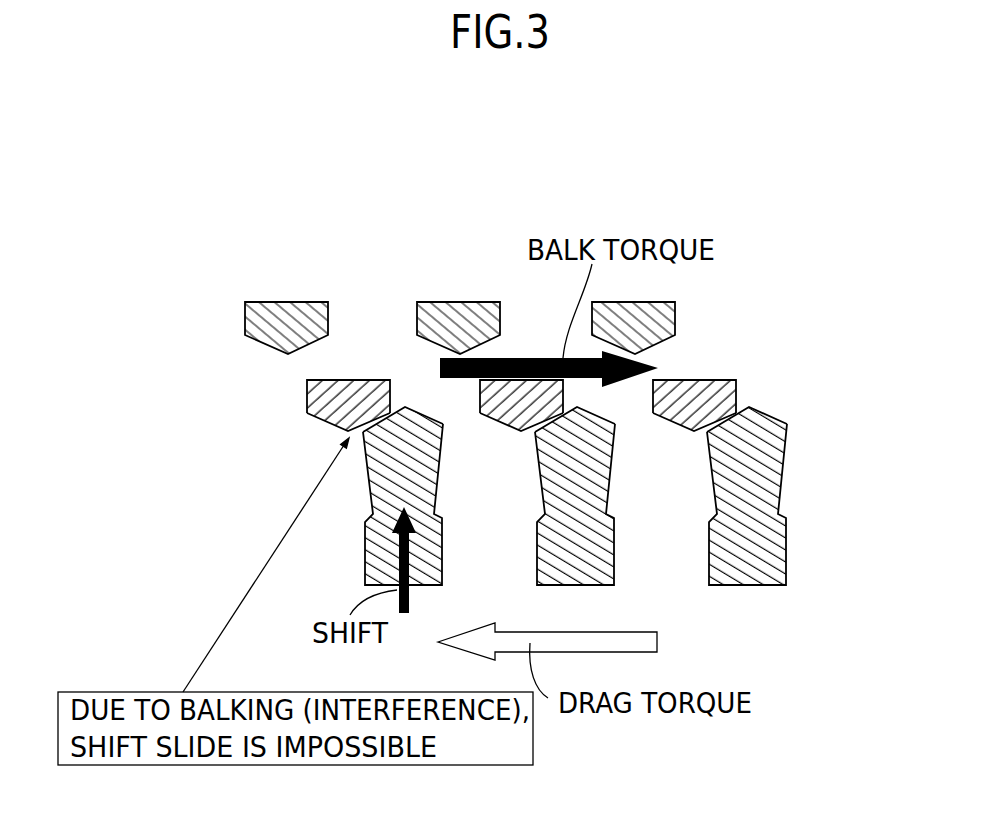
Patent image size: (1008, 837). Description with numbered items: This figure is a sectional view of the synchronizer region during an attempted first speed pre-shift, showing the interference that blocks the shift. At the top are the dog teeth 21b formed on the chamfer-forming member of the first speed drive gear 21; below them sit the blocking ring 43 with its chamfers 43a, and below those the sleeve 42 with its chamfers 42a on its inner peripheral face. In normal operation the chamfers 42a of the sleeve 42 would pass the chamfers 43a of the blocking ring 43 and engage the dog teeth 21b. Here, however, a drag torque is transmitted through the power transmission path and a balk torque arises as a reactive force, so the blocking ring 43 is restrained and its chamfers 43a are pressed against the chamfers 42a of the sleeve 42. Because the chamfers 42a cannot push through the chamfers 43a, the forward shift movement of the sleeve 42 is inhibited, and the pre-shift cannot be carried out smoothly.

The first speed drive gear 21 is at (505, 290).
The dog teeth 21b is at (320, 322).
The blocking ring 43 is at (550, 410).
The chamfers 43a is at (308, 414).
The sleeve 42 is at (589, 496).
The chamfers 42a is at (367, 463).